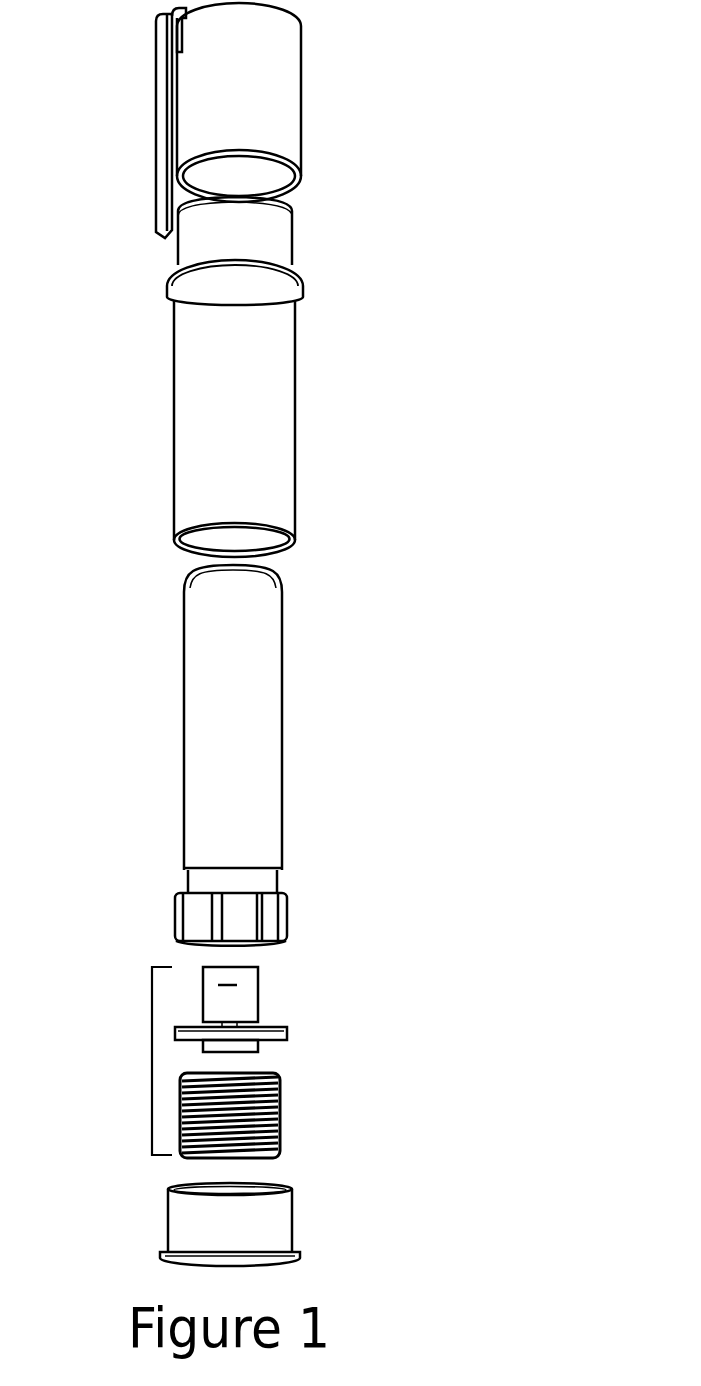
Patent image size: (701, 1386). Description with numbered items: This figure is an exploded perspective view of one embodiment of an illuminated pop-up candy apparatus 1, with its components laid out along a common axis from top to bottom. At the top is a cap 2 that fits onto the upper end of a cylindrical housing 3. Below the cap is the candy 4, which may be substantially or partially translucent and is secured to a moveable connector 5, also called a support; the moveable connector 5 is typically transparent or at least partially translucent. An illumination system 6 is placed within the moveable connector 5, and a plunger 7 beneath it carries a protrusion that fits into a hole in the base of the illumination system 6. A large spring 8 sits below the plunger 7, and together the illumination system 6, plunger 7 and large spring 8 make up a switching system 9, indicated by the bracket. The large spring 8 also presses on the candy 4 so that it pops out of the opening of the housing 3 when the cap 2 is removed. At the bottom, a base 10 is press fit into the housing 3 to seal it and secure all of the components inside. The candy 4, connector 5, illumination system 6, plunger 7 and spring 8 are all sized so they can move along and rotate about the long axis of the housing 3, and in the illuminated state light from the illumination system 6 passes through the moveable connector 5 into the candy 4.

The candy apparatus 1 is at (138, 96).
The cap 2 is at (302, 97).
The cylindrical housing 3 is at (296, 383).
The candy 4 is at (282, 708).
The moveable connector 5 is at (287, 908).
The illumination system 6 is at (258, 993).
The plunger 7 is at (287, 1032).
The large spring 8 is at (280, 1108).
The switching system 9 is at (243, 1053).
The base 10 is at (292, 1218).